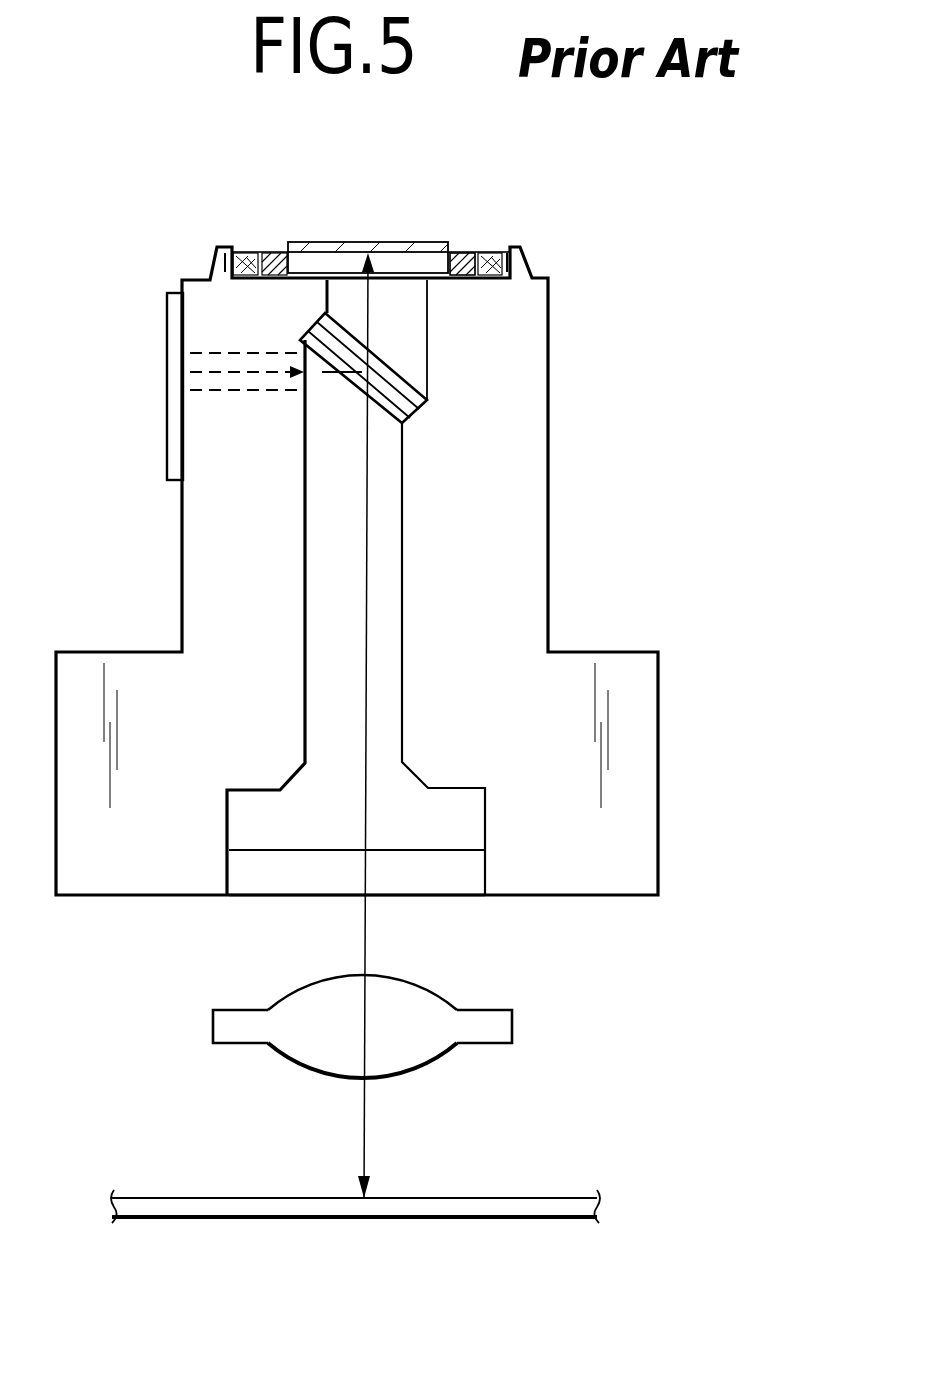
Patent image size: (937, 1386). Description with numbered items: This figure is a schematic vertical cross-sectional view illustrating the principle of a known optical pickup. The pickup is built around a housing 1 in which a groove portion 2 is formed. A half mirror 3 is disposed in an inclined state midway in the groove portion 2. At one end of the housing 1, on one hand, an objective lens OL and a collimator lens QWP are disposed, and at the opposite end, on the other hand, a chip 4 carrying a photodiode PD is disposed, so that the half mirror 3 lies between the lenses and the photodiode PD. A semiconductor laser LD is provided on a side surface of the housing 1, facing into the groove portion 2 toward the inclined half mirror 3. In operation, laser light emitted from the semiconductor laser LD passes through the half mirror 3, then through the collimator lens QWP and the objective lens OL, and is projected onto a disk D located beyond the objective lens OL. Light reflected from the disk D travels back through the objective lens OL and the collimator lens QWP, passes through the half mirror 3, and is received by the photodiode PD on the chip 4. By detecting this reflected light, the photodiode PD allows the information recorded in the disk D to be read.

The housing 1 is at (503, 570).
The groove portion 2 is at (390, 625).
The half mirror 3 is at (393, 362).
The chip 4 is at (467, 252).
The photodiode PD is at (343, 240).
The semiconductor laser LD is at (167, 368).
The collimator lens QWP is at (462, 872).
The objective lens OL is at (410, 1008).
The disk D is at (420, 1207).